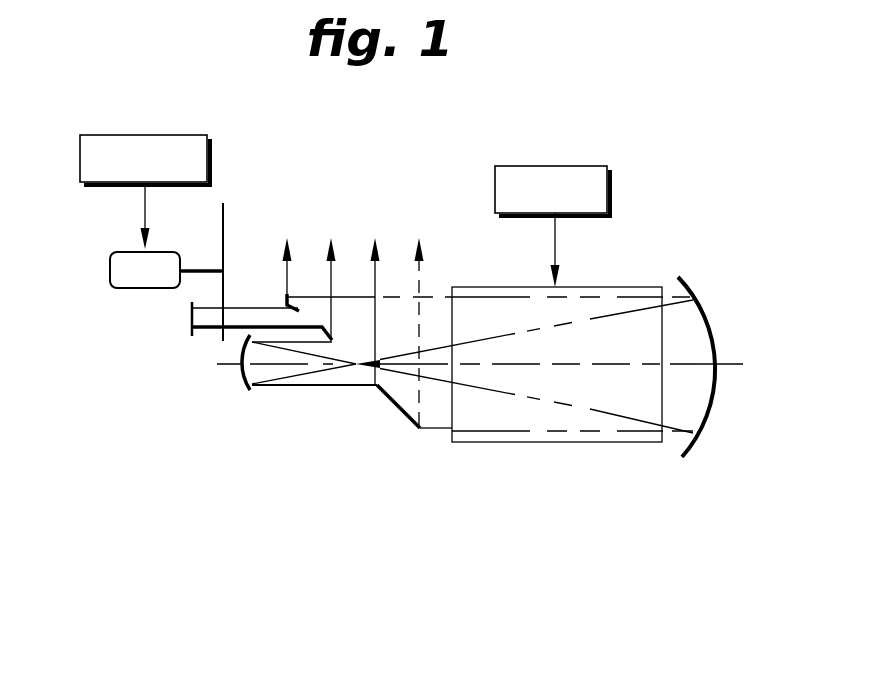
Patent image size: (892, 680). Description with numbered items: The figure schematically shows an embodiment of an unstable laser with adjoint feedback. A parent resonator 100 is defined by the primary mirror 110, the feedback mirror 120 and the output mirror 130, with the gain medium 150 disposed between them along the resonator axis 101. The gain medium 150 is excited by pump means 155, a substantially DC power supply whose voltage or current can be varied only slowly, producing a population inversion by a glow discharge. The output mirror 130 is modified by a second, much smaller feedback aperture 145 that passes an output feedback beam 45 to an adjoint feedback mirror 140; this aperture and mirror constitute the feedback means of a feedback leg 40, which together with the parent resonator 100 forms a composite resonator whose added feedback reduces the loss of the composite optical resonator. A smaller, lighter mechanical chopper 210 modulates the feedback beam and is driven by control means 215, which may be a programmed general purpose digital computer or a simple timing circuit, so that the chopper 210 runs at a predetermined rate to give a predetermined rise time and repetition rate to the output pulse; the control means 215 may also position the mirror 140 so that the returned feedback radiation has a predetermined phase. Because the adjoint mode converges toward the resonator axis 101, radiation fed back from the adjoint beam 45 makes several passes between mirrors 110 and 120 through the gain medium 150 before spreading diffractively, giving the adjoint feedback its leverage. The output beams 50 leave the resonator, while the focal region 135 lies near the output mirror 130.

The parent resonator 100 is at (627, 241).
The resonator axis 101 is at (723, 364).
The primary mirror 110 is at (713, 317).
The feedback mirror 120 is at (248, 386).
The output mirror 130 is at (392, 400).
The focal region 135 is at (343, 352).
The adjoint feedback mirror 140 is at (189, 333).
The feedback aperture 145 is at (306, 318).
The gain medium 150 is at (580, 287).
The pump means 155 is at (527, 166).
The chopper 210 is at (222, 206).
The control means 215 is at (129, 135).
The feedback leg 40 is at (255, 217).
The output feedback beam 45 is at (243, 326).
The output beams 50 is at (433, 223).